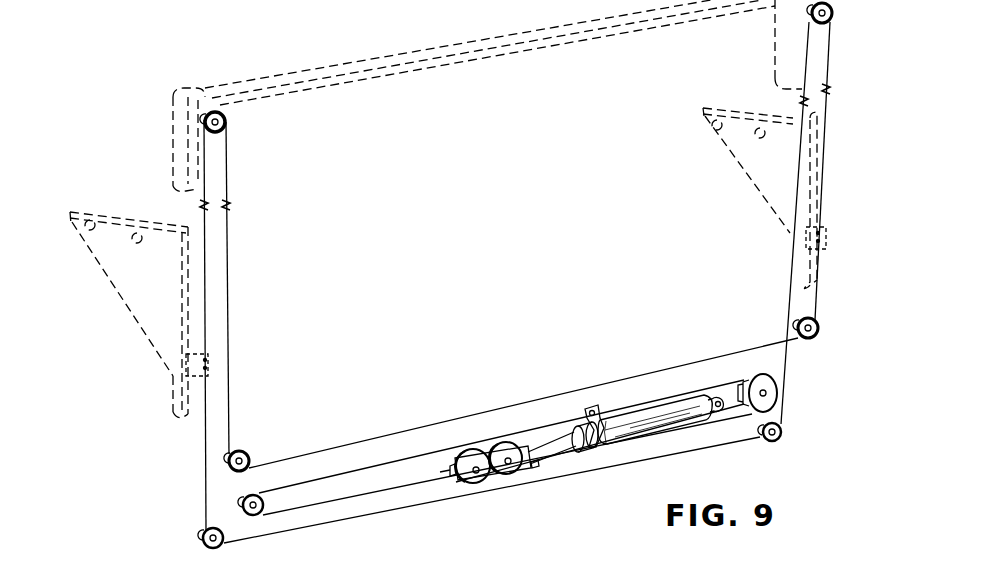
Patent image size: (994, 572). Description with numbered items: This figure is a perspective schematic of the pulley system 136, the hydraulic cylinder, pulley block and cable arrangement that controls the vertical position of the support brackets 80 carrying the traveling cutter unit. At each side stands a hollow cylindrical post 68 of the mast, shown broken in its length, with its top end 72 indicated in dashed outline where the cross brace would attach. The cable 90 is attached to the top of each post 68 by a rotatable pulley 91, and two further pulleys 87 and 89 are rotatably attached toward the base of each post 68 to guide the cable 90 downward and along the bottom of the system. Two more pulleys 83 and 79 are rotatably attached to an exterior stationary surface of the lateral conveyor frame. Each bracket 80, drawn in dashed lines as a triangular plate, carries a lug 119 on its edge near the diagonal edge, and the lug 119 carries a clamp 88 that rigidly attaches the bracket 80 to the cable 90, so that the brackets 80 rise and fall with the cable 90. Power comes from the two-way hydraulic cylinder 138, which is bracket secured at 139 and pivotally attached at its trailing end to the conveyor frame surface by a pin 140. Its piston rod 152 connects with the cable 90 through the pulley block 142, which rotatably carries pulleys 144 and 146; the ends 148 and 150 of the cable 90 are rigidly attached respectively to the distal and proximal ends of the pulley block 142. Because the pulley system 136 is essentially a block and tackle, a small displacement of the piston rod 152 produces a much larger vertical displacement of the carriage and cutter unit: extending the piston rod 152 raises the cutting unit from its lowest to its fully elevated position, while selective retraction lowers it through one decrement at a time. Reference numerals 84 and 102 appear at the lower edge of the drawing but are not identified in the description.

The hollow cylindrical post 68 is at (172, 113).
The top end of post 72 is at (183, 86).
The pulley 79 is at (777, 393).
The bracket 80 is at (152, 284).
The pulley 83 is at (242, 506).
The cable 84 is at (346, 567).
The pulley 87 is at (208, 548).
The clamp 88 is at (820, 233).
The pulley 89 is at (250, 451).
The cable 90 is at (228, 178).
The rotatable pulley 91 is at (224, 109).
The cable 102 is at (401, 568).
The lug 119 is at (826, 250).
The pulley system 136 is at (353, 378).
The two-way hydraulic cylinder 138 is at (646, 449).
The bracket 139 is at (590, 406).
The pin 140 is at (718, 396).
The pulley block 142 is at (502, 484).
The pulley 144 is at (478, 450).
The pulley 146 is at (508, 442).
The cable end 148 is at (463, 488).
The cable end 150 is at (532, 476).
The piston rod 152 is at (548, 440).